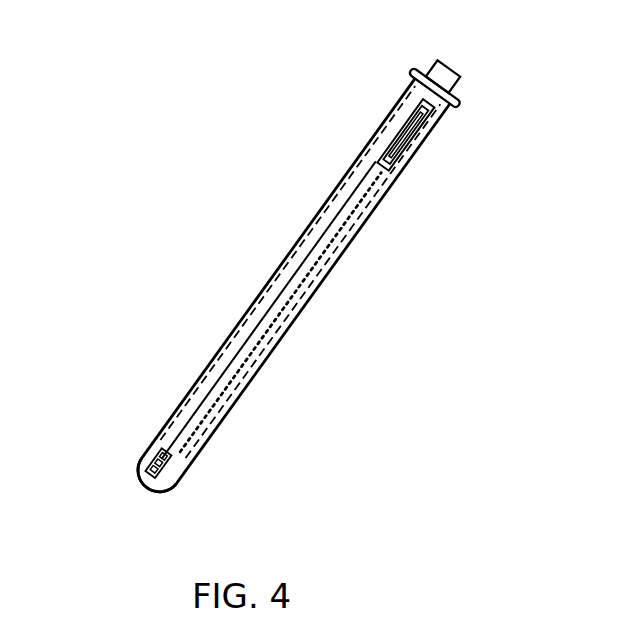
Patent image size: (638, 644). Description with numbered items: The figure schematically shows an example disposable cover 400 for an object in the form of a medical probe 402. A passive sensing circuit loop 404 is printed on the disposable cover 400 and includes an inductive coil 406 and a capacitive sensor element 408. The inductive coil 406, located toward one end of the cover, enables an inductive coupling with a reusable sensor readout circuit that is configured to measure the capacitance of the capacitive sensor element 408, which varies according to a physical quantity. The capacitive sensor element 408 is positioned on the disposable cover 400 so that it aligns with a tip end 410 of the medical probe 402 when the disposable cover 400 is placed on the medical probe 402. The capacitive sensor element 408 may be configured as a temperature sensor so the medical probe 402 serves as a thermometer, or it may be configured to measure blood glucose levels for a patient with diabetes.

The disposable cover 400 is at (296, 243).
The medical probe 402 is at (450, 67).
The sensing circuit loop 404 is at (319, 205).
The inductive coil 406 is at (376, 109).
The capacitive sensor element 408 is at (147, 459).
The tip end 410 is at (127, 494).